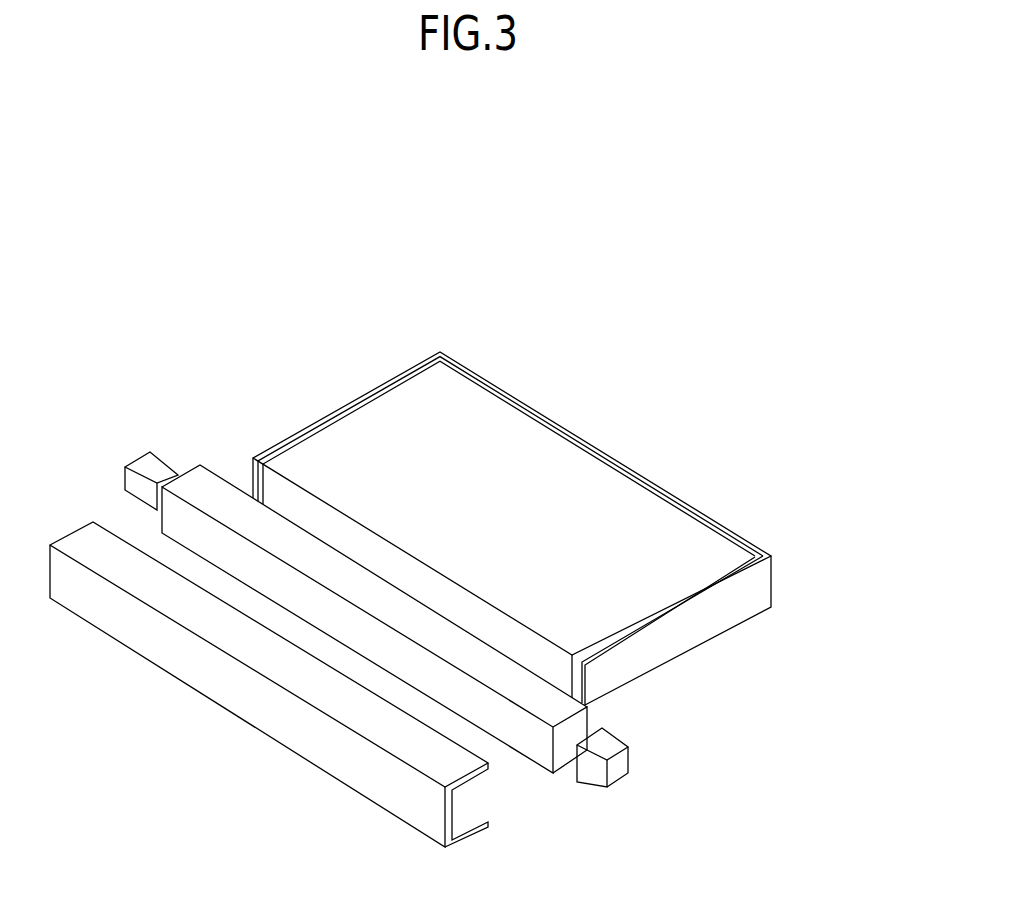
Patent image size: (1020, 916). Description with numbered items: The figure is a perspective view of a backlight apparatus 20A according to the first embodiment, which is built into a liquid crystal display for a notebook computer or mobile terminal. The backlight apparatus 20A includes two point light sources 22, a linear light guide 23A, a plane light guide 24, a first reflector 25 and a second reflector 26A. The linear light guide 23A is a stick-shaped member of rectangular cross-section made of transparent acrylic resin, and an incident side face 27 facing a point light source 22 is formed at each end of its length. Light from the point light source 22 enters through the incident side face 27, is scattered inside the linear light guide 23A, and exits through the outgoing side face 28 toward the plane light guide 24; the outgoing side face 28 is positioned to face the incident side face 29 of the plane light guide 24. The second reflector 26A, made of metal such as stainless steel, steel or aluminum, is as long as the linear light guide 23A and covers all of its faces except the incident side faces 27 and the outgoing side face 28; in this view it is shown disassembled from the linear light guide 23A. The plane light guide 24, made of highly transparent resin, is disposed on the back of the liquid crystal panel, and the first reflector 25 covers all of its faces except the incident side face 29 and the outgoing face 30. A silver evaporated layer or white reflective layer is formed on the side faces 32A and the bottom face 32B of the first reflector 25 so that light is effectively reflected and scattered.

The backlight apparatus 20A is at (325, 249).
The point light source 22 is at (125, 467).
The linear light guide 23A is at (225, 497).
The plane light guide 24 is at (557, 472).
The first reflector 25 is at (705, 607).
The second reflector 26A is at (328, 755).
The incident side face 27 is at (192, 477).
The outgoing side face 28 is at (485, 638).
The incident side face 29 is at (377, 550).
The outgoing face 30 is at (643, 522).
The side face 32A is at (352, 403).
The bottom face 32B is at (723, 521).